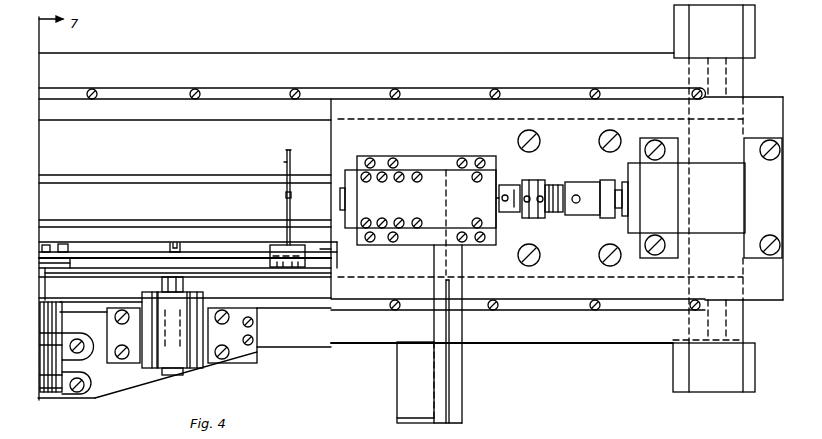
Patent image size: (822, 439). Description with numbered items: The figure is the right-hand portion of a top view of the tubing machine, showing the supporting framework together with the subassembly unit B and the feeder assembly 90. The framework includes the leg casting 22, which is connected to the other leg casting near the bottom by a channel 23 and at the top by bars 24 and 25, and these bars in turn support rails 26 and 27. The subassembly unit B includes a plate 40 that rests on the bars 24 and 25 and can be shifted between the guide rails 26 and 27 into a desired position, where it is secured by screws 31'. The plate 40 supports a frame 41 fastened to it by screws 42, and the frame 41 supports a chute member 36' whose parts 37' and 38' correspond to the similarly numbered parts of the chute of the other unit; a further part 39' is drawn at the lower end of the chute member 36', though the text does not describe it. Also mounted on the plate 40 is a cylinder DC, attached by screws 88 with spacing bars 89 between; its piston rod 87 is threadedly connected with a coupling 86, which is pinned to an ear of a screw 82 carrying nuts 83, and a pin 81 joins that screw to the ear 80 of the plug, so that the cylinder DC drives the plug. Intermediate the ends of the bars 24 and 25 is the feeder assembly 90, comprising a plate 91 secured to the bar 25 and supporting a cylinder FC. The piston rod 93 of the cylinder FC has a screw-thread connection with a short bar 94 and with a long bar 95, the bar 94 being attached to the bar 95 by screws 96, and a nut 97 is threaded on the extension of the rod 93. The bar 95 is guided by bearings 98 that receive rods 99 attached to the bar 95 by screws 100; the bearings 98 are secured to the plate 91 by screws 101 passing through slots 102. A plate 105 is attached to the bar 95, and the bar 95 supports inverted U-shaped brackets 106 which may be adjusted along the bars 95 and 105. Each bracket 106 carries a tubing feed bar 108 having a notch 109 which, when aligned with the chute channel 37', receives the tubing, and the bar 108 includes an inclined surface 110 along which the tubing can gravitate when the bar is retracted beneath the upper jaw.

The leg casting 22 is at (715, 393).
The channel 23 is at (180, 175).
The bar 24 is at (188, 53).
The bar 25 is at (612, 343).
The rail 26 is at (252, 88).
The rail 27 is at (557, 310).
The screw 31' is at (569, 198).
The chute member 36' is at (463, 334).
The chute channel 37' is at (422, 255).
The chute part 38' is at (471, 351).
The lower block 39' is at (400, 382).
The plate 40 is at (331, 155).
The frame 41 is at (437, 168).
The screw 42 is at (372, 165).
The ear 80 is at (508, 212).
The pin 81 is at (504, 185).
The screw 82 is at (556, 185).
The nut 83 is at (533, 218).
The coupling 86 is at (590, 184).
The piston rod 87 is at (612, 218).
The screw 88 is at (757, 245).
The spacing bar 89 is at (762, 258).
The feeder assembly 90 is at (56, 395).
The plate 91 is at (130, 384).
The piston rod 93 is at (50, 286).
The short bar 94 is at (75, 268).
The long bar 95 is at (193, 252).
The screw 96 is at (68, 247).
The nut 97 is at (47, 243).
The bearing 98 is at (206, 365).
The rod 99 is at (190, 284).
The screw 100 is at (176, 243).
The screw 101 is at (93, 330).
The slot 102 is at (114, 318).
The plate 105 is at (262, 242).
The inverted U-shaped bracket 106 is at (300, 268).
The tubing feed bar 108 is at (284, 162).
The notch 109 is at (291, 197).
The inclined surface 110 is at (288, 150).
The subassembly unit B is at (470, 107).
The cylinder DC is at (712, 163).
The cylinder FC is at (61, 417).